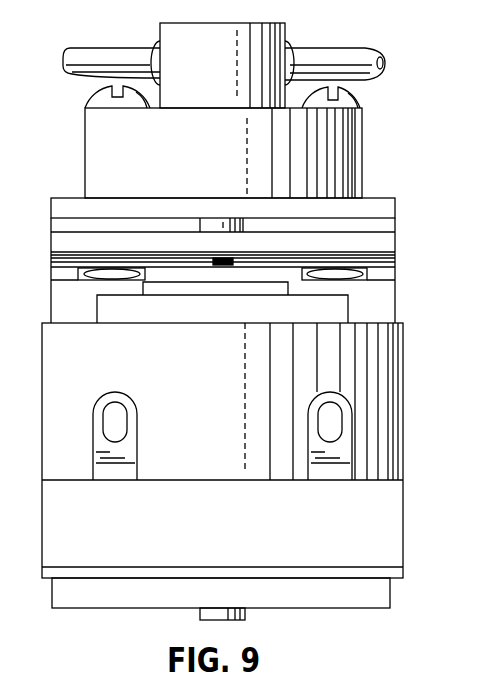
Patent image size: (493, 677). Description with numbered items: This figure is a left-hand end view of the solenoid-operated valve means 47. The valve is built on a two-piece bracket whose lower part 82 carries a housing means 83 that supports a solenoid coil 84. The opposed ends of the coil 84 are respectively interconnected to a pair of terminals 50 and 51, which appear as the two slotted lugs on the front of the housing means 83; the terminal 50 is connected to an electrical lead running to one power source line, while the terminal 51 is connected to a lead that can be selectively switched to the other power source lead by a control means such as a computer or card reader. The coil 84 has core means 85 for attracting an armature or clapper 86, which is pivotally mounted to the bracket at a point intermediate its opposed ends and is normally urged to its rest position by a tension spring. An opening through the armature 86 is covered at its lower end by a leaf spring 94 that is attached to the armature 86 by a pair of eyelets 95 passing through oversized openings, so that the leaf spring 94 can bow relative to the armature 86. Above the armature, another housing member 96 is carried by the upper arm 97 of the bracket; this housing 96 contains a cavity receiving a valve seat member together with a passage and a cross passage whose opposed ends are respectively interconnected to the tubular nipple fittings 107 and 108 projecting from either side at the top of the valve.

The valve means 47 is at (404, 106).
The tubular nipple fitting 108 is at (102, 58).
The tubular nipple fitting 107 is at (338, 58).
The housing member 96 is at (102, 133).
The upper arm 97 is at (380, 210).
The armature 86 is at (383, 243).
The eyelets 95 is at (348, 286).
The leaf spring 94 is at (258, 275).
The core means 85 is at (213, 290).
The solenoid coil 84 is at (345, 308).
The housing means 83 is at (380, 523).
The terminal 51 is at (100, 405).
The terminal 50 is at (345, 426).
The lower part 82 is at (327, 597).